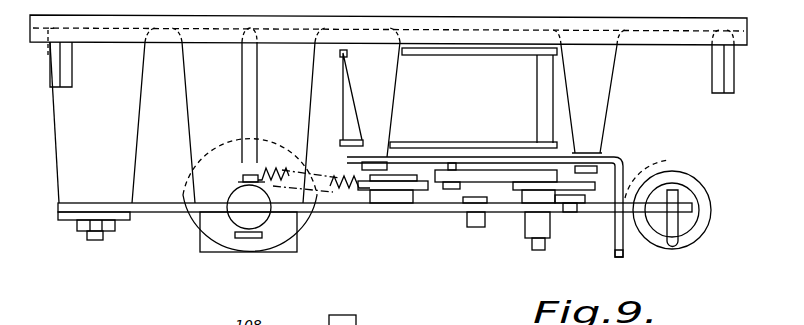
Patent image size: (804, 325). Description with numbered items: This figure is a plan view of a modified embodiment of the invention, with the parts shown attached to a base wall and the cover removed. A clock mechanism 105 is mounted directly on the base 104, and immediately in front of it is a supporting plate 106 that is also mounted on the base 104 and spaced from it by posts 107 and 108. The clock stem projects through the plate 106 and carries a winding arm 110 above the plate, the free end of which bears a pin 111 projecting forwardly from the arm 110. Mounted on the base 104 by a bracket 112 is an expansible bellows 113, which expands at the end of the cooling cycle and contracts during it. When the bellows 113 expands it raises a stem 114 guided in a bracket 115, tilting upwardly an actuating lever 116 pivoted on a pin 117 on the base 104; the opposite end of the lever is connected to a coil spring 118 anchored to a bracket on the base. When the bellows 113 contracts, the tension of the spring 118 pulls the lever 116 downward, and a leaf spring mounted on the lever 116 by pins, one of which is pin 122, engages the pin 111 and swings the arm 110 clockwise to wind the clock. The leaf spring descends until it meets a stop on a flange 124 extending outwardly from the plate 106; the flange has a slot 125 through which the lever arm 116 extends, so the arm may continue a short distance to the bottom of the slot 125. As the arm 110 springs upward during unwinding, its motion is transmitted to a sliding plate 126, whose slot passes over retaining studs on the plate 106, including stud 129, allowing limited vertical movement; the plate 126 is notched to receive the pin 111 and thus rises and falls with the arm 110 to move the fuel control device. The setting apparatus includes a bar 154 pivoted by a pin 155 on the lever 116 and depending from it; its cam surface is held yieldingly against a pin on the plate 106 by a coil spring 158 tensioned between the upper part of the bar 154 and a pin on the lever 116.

The base 104 is at (445, 40).
The clock mechanism 105 is at (594, 73).
The supporting plate 106 is at (612, 160).
The post 107 is at (606, 112).
The post 108 is at (388, 113).
The winding arm 110 is at (493, 158).
The pin 111 is at (544, 230).
The bracket 112 is at (191, 137).
The expansible bellows 113 is at (183, 227).
The stem 114 is at (258, 220).
The bracket 115 is at (200, 88).
The actuating lever 116 is at (402, 212).
The pin 117 is at (78, 232).
The coil spring 118 is at (705, 208).
The pin 122 is at (477, 222).
The flange 124 is at (622, 252).
The slot 125 is at (660, 172).
The sliding plate 126 is at (518, 198).
The retaining stud 129 is at (568, 212).
The bar 154 is at (428, 197).
The pin 155 is at (388, 198).
The coil spring 158 is at (342, 172).